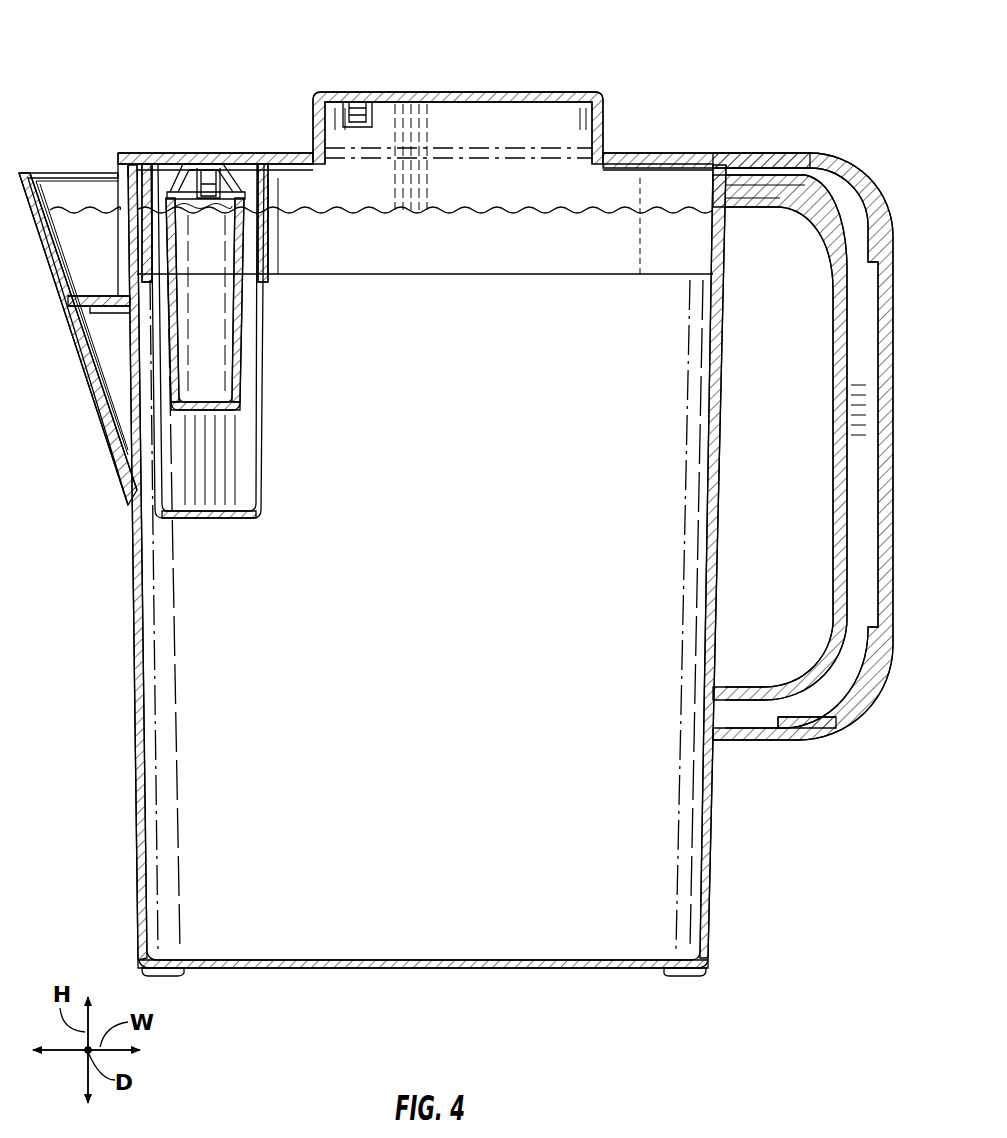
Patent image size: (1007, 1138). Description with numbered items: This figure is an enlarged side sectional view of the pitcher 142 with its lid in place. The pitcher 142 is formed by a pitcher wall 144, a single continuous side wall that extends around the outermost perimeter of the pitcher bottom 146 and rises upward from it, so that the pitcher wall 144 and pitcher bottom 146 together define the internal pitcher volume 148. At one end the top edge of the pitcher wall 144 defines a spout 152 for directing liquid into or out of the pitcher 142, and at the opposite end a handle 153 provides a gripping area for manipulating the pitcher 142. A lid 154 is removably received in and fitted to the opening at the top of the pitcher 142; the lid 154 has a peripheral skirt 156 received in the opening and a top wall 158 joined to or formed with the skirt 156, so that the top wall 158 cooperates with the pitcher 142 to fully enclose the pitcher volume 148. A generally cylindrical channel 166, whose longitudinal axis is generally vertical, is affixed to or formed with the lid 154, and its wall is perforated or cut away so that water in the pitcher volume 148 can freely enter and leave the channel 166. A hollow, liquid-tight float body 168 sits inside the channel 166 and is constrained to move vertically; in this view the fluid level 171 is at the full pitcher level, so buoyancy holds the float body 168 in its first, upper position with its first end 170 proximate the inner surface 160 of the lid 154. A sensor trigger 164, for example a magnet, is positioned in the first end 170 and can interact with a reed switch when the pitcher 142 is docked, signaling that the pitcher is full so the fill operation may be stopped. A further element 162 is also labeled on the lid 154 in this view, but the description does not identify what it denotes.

The pitcher 142 is at (812, 68).
The pitcher wall 144 is at (130, 765).
The pitcher bottom 146 is at (600, 968).
The pitcher volume 148 is at (394, 536).
The spout 152 is at (55, 182).
The handle 153 is at (891, 436).
The lid 154 is at (166, 153).
The peripheral skirt 156 is at (658, 245).
The top wall 158 is at (560, 92).
The inner surface 160 is at (287, 164).
The vent 162 is at (356, 100).
The sensor trigger 164 is at (208, 170).
The channel 166 is at (160, 490).
The float body 168 is at (172, 368).
The first end 170 is at (170, 203).
The fluid level 171 is at (650, 210).